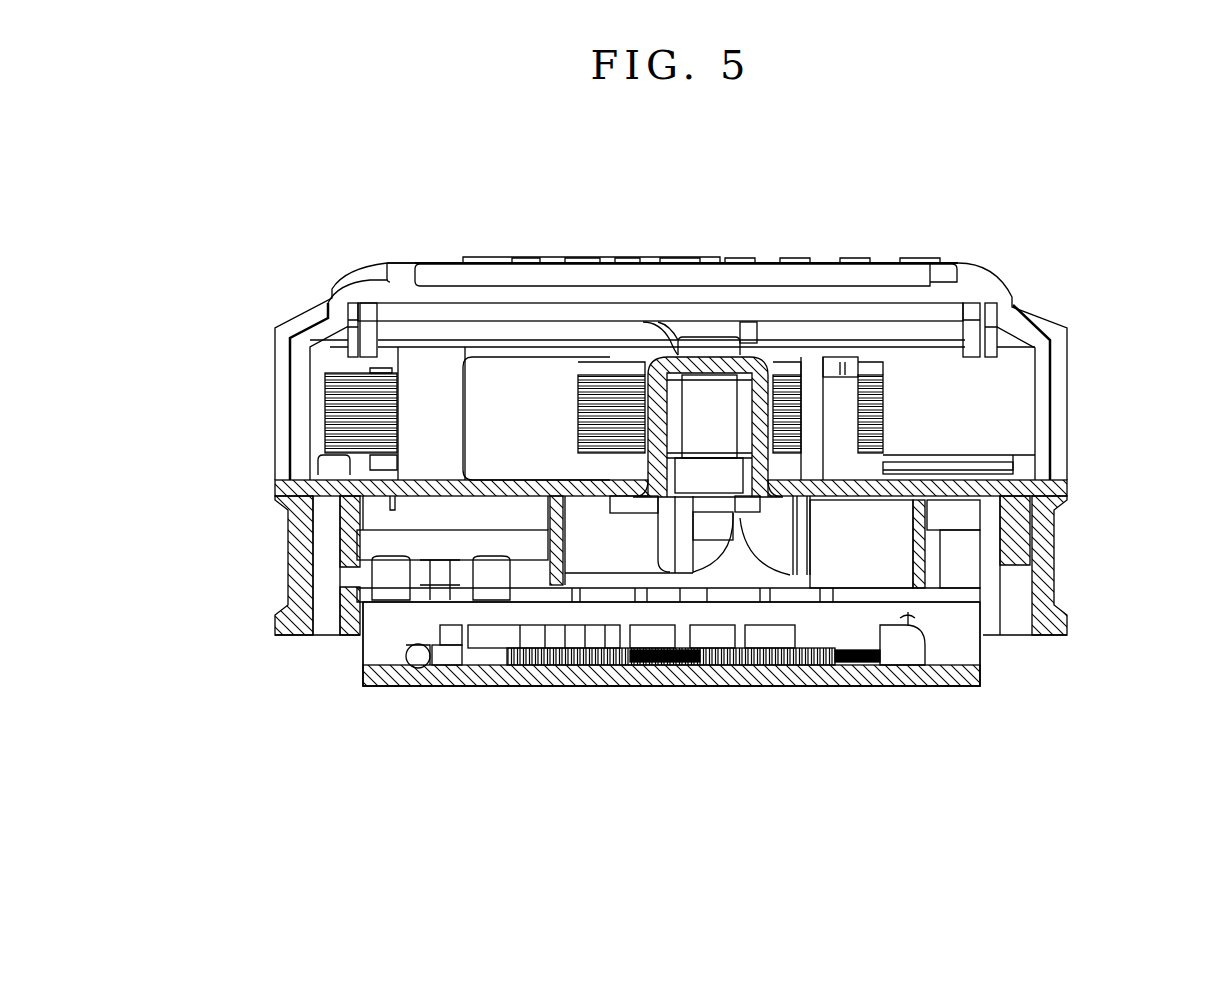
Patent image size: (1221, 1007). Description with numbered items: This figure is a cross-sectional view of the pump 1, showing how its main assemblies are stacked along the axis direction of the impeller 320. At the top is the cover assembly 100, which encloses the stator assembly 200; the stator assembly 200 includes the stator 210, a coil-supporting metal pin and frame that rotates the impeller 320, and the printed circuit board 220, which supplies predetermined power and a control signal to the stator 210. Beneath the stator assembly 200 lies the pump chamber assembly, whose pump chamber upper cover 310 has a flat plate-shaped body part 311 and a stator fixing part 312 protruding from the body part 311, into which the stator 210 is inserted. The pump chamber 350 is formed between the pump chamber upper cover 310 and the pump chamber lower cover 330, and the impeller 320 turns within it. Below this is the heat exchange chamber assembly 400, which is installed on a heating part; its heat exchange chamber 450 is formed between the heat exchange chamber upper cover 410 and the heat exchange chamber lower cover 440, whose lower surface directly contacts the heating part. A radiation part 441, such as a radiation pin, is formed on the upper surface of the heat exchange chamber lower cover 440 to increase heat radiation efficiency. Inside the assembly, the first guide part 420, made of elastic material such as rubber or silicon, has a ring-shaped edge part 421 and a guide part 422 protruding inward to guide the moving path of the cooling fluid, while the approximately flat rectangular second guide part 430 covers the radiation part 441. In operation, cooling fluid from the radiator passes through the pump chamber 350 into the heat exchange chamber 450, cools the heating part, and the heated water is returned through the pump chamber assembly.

The pump 1 is at (920, 190).
The cover assembly 100 is at (996, 266).
The stator assembly 200 is at (1158, 360).
The stator 210 is at (880, 407).
The printed circuit board 220 is at (988, 452).
The pump chamber upper cover 310 is at (268, 490).
The body part 311 is at (440, 480).
The stator fixing part 312 is at (700, 357).
The impeller 320 is at (773, 543).
The pump chamber lower cover 330 is at (280, 558).
The pump chamber 350 is at (880, 533).
The heat exchange chamber assembly 400 is at (988, 681).
The heat exchange chamber upper cover 410 is at (985, 652).
The first guide part 420 is at (418, 688).
The edge part 421 is at (418, 660).
The guide part 422 is at (633, 650).
The second guide part 430 is at (493, 655).
The heat exchange chamber lower cover 440 is at (450, 675).
The radiation part 441 is at (563, 668).
The heat exchange chamber 450 is at (915, 630).